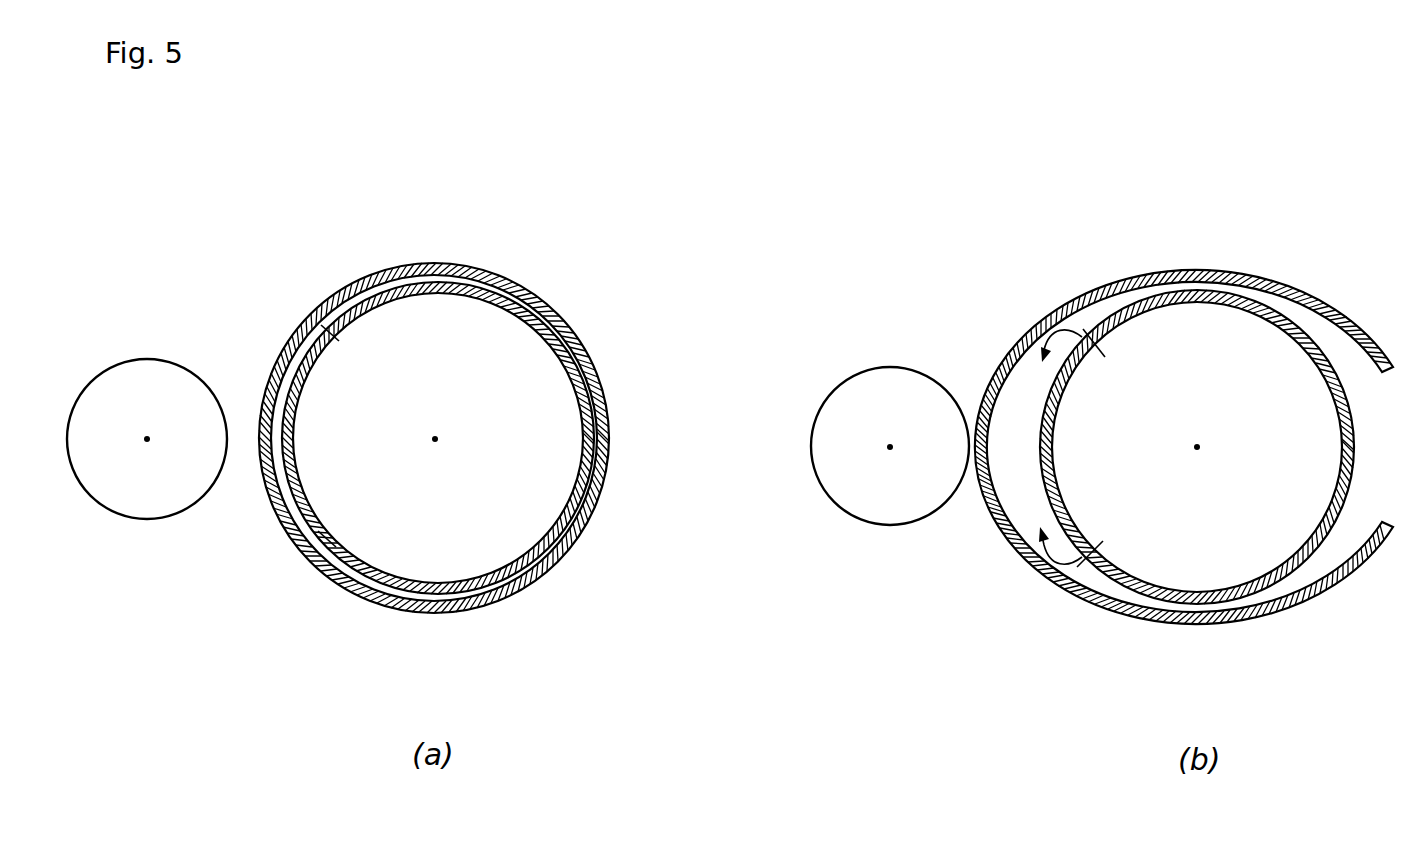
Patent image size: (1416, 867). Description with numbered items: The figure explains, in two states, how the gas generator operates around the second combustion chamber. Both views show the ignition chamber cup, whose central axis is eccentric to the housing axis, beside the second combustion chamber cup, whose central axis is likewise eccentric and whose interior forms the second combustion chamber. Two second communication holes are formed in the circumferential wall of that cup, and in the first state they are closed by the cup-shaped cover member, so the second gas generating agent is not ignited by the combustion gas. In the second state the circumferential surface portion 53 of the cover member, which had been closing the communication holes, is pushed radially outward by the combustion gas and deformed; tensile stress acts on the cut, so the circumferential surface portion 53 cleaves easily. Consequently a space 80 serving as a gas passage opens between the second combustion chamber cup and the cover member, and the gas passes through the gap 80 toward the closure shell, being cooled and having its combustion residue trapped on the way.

The circumferential surface portion 53 is at (1112, 283).
The space (gap) 80 is at (1035, 458).